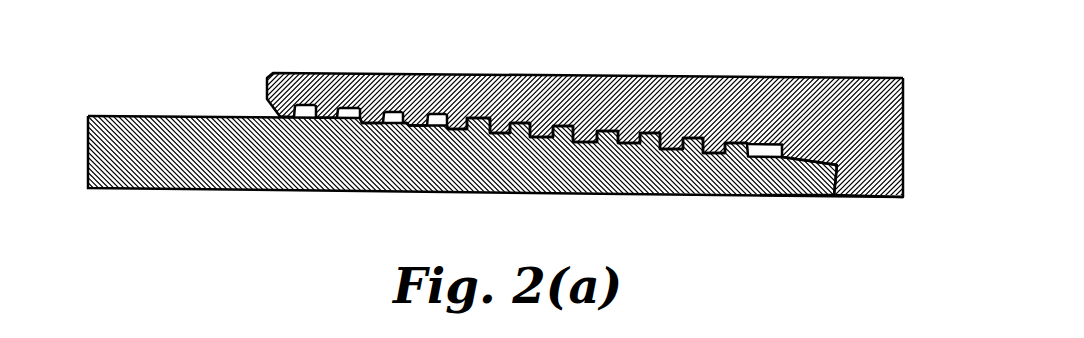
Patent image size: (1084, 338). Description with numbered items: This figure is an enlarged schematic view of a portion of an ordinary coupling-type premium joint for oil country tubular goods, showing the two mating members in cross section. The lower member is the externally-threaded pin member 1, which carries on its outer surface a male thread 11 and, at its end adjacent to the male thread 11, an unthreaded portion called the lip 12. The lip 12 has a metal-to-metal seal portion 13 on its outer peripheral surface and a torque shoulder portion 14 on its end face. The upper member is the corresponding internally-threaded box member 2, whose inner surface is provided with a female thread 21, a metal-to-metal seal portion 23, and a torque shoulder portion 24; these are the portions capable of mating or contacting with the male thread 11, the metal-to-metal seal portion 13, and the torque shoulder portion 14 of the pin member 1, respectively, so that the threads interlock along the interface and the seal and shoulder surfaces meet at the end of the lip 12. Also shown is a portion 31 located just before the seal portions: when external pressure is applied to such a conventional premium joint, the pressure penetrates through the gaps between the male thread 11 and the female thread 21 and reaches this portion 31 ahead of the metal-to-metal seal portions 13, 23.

The pin member 1 is at (495, 169).
The male thread 11 is at (611, 137).
The lip 12 is at (793, 178).
The metal-to-metal seal portion 13 is at (810, 167).
The torque shoulder portion 14 is at (826, 166).
The box member 2 is at (611, 169).
The female thread 21 is at (629, 136).
The metal-to-metal seal portion 23 is at (828, 162).
The torque shoulder portion 24 is at (838, 182).
The portion just before the seal portions 31 is at (766, 150).